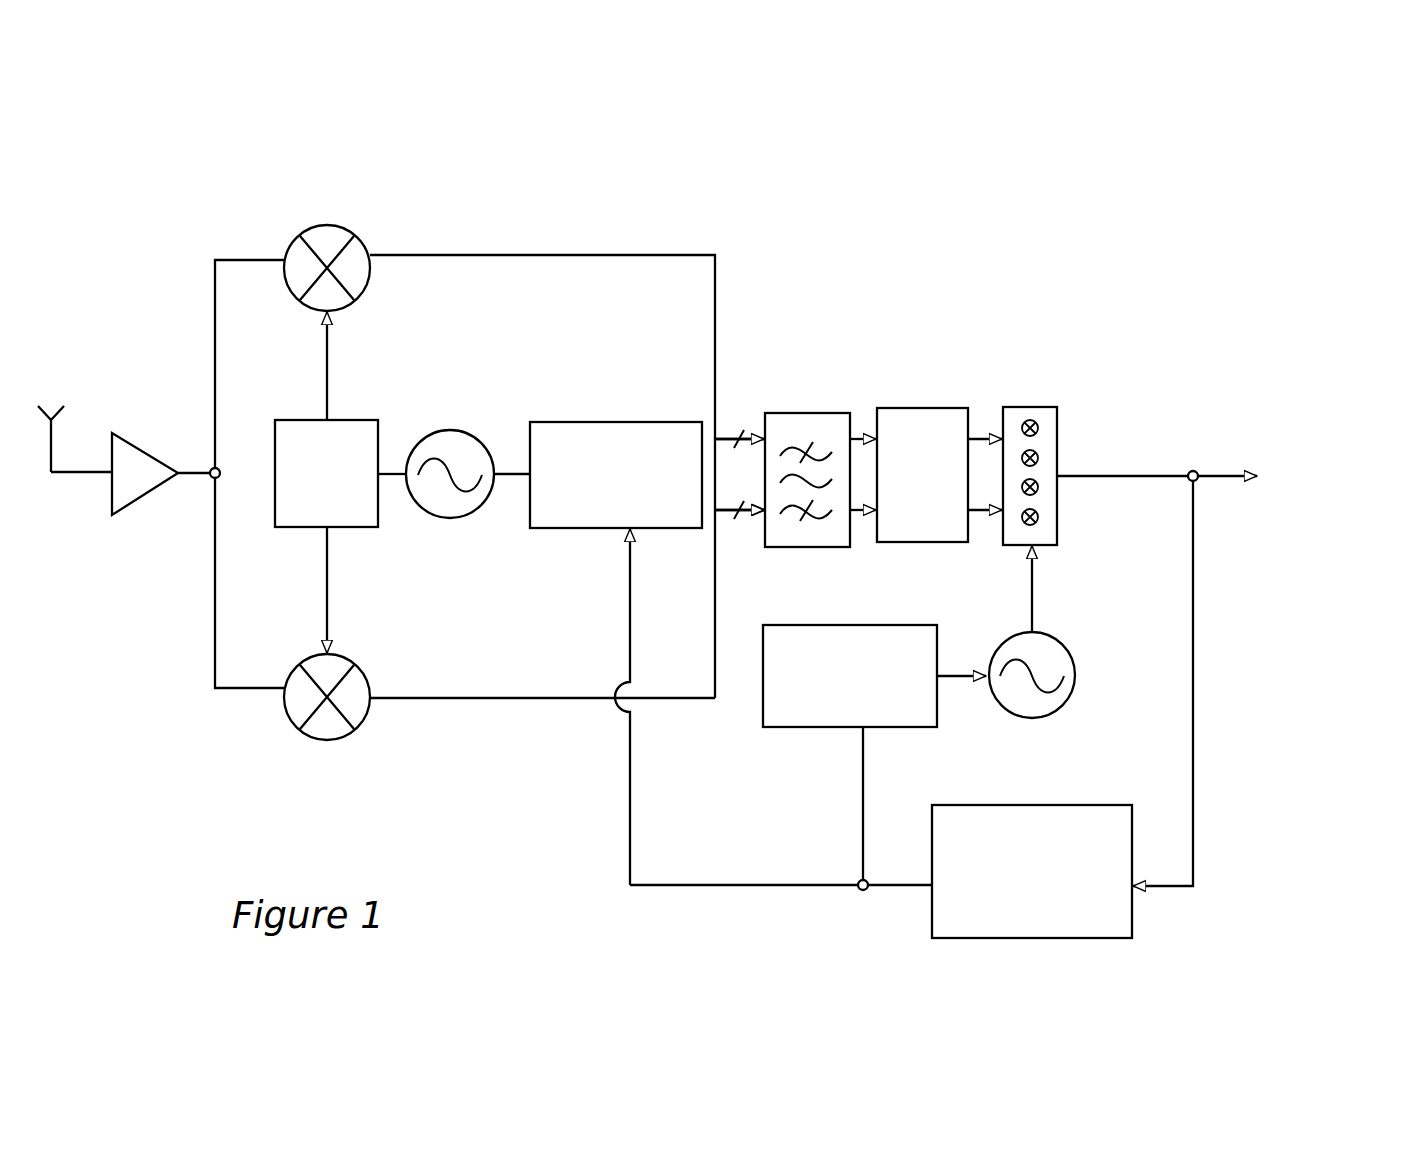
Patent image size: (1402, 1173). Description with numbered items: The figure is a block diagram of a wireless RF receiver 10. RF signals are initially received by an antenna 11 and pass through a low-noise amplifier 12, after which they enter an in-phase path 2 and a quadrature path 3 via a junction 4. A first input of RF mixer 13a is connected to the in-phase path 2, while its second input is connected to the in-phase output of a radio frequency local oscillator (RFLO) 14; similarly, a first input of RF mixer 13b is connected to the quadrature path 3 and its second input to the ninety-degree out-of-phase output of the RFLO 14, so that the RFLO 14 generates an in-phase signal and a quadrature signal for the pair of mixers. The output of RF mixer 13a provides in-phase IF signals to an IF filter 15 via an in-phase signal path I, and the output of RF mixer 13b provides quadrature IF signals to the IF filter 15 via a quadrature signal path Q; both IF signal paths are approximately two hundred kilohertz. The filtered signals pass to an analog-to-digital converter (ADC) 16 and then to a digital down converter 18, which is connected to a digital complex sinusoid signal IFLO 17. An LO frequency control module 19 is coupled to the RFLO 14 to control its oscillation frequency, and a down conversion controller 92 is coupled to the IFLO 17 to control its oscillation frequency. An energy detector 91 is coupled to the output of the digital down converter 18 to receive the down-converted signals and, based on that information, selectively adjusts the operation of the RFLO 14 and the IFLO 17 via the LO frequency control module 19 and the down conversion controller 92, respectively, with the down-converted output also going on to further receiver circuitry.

The RF receiver 10 is at (668, 188).
The antenna 11 is at (51, 433).
The low-noise amplifier 12 is at (152, 490).
The junction 4 is at (210, 469).
The in-phase path 2 is at (240, 258).
The quadrature path 3 is at (240, 690).
The RF mixer 13a is at (358, 232).
The RF mixer 13b is at (330, 740).
The radio frequency local oscillator 14 is at (445, 518).
The LO frequency control module 19 is at (616, 653).
The IF filter 15 is at (805, 413).
The analog-to-digital converter 16 is at (923, 408).
The digital down converter 18 is at (1030, 407).
The digital complex sinusoid signal IFLO 17 is at (1075, 675).
The down conversion controller 92 is at (874, 757).
The energy detector 91 is at (911, 709).